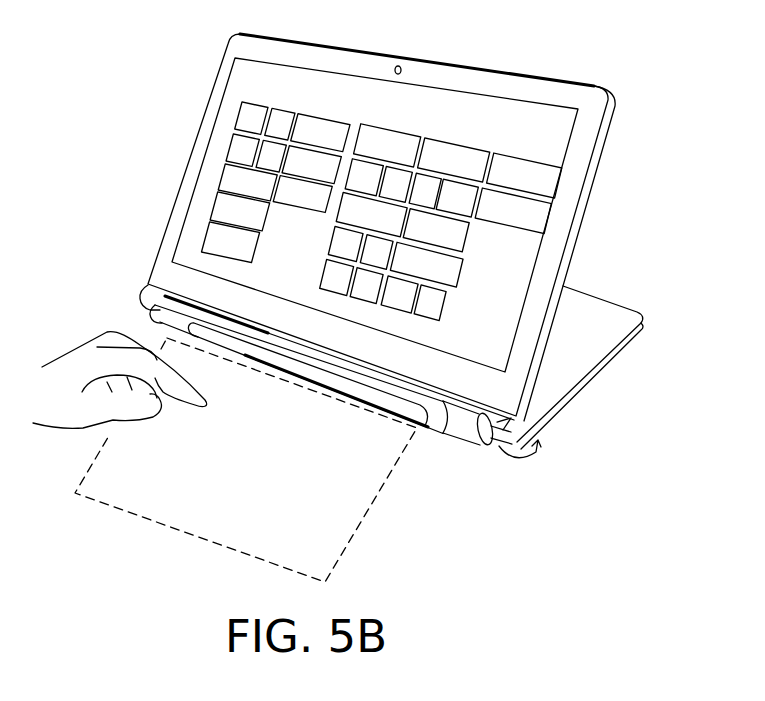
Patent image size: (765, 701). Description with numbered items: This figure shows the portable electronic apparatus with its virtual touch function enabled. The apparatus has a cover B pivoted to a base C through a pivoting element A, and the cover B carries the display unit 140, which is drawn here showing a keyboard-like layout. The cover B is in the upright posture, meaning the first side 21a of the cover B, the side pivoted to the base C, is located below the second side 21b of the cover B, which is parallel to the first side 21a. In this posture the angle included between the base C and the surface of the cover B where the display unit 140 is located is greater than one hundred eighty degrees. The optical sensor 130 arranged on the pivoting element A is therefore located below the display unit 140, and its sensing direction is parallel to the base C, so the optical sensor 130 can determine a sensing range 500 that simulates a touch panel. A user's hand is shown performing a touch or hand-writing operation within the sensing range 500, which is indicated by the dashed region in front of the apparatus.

The first side 21a is at (157, 293).
The second side 21b is at (353, 47).
The display unit 140 is at (224, 113).
The optical sensor 130 is at (377, 398).
The sensing range 500 is at (347, 550).
The pivoting element A is at (428, 424).
The cover B is at (594, 175).
The base C is at (603, 355).